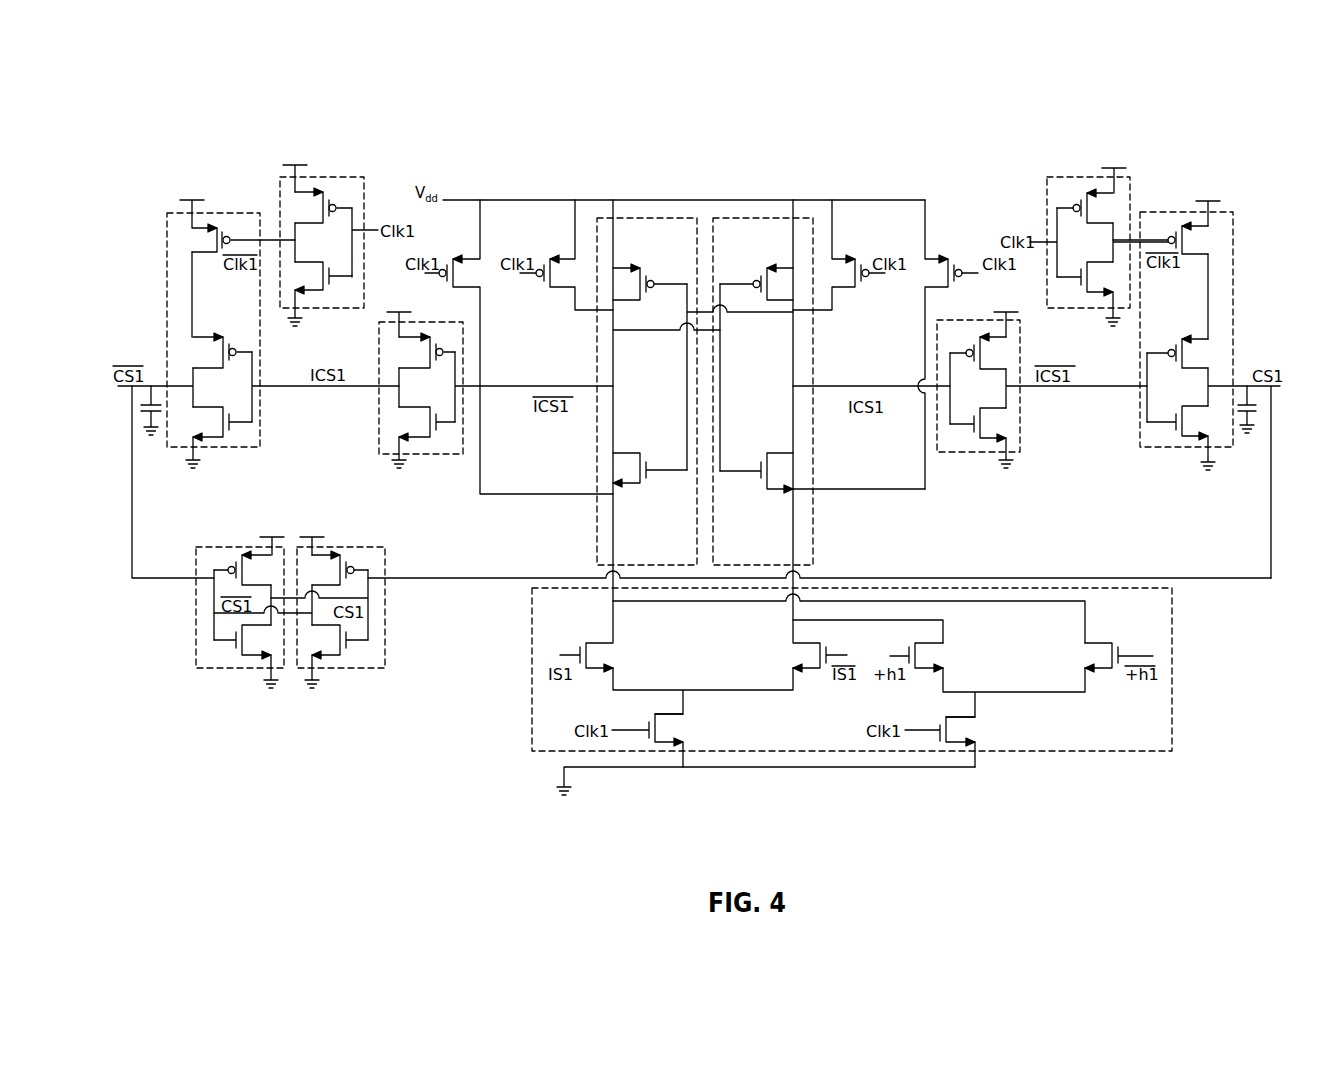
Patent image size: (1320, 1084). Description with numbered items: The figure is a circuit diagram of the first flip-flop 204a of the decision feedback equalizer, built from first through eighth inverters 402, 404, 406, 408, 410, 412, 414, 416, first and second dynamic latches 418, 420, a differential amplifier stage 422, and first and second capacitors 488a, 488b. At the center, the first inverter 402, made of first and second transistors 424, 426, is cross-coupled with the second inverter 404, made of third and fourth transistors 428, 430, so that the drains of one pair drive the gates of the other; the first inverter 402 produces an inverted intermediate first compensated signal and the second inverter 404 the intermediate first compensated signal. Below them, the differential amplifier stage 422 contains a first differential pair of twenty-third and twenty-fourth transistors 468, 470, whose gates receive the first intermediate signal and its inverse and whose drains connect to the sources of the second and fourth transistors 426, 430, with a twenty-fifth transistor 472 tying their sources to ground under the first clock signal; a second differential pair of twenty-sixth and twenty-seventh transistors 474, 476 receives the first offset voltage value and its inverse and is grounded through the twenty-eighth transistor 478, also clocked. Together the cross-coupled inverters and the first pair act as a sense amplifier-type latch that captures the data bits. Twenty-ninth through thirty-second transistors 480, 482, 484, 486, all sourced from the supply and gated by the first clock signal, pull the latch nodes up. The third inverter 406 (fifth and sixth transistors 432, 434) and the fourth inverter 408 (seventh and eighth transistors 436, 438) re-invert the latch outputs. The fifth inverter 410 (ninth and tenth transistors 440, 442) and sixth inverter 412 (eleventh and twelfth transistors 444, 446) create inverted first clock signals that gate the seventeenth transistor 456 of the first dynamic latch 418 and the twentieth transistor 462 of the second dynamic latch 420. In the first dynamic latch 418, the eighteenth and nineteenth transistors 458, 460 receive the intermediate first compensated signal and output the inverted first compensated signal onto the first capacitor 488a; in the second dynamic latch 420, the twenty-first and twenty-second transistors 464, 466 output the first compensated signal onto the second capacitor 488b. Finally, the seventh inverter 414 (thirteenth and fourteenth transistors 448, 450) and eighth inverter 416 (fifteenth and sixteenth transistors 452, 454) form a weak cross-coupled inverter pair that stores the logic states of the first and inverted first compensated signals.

The first flip-flop 204a is at (228, 779).
The first inverter 402 is at (597, 548).
The second inverter 404 is at (813, 548).
The third inverter 406 is at (440, 455).
The fourth inverter 408 is at (960, 453).
The fifth inverter 410 is at (280, 192).
The sixth inverter 412 is at (1130, 192).
The seventh inverter 414 is at (196, 637).
The eighth inverter 416 is at (385, 645).
The first dynamic latch 418 is at (167, 312).
The second dynamic latch 420 is at (1140, 447).
The differential amplifier stage 422 is at (1172, 662).
The first transistor 424 is at (628, 268).
The second transistor 426 is at (622, 453).
The third transistor 428 is at (788, 268).
The fourth transistor 430 is at (790, 455).
The fifth transistor 432 is at (412, 370).
The sixth transistor 434 is at (437, 440).
The seventh transistor 436 is at (1005, 338).
The eighth transistor 438 is at (984, 440).
The ninth transistor 440 is at (312, 190).
The tenth transistor 442 is at (317, 292).
The eleventh transistor 444 is at (1100, 193).
The twelfth transistor 446 is at (1097, 295).
The thirteenth transistor 448 is at (258, 555).
The fourteenth transistor 450 is at (245, 660).
The fifteenth transistor 452 is at (330, 555).
The sixteenth transistor 454 is at (338, 660).
The seventeenth transistor 456 is at (212, 248).
The eighteenth transistor 458 is at (207, 335).
The nineteenth transistor 460 is at (232, 440).
The twentieth transistor 462 is at (1200, 255).
The twenty-first transistor 464 is at (1205, 365).
The twenty-second transistor 466 is at (1182, 440).
The twenty-third transistor 468 is at (600, 642).
The twenty-fourth transistor 470 is at (797, 672).
The twenty-fifth transistor 472 is at (682, 742).
The twenty-sixth transistor 474 is at (918, 672).
The twenty-seventh transistor 476 is at (1102, 642).
The twenty-eighth transistor 478 is at (975, 742).
The twenty-ninth transistor 480 is at (470, 258).
The thirtieth transistor 482 is at (565, 258).
The thirty-first transistor 484 is at (838, 258).
The thirty-second transistor 486 is at (933, 258).
The first capacitor 488a is at (160, 425).
The second capacitor 488b is at (1240, 428).